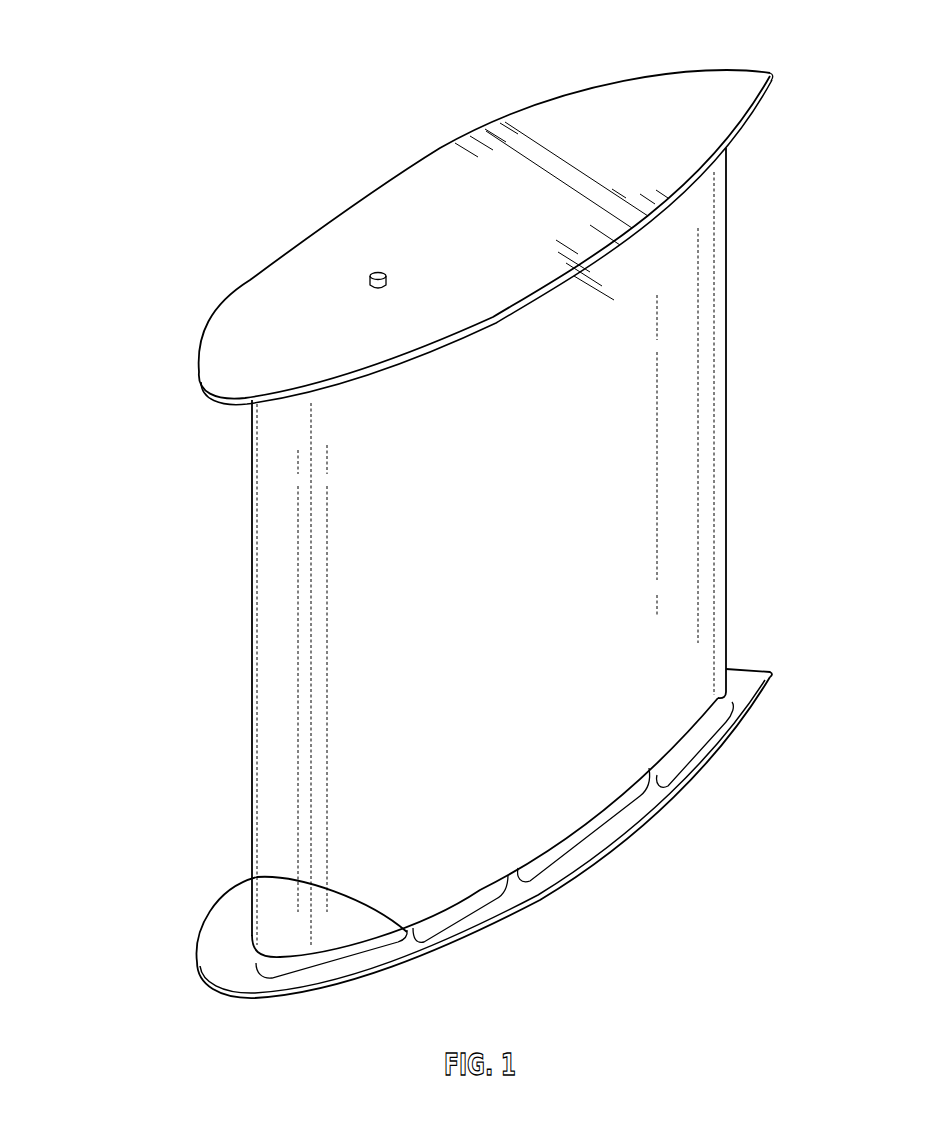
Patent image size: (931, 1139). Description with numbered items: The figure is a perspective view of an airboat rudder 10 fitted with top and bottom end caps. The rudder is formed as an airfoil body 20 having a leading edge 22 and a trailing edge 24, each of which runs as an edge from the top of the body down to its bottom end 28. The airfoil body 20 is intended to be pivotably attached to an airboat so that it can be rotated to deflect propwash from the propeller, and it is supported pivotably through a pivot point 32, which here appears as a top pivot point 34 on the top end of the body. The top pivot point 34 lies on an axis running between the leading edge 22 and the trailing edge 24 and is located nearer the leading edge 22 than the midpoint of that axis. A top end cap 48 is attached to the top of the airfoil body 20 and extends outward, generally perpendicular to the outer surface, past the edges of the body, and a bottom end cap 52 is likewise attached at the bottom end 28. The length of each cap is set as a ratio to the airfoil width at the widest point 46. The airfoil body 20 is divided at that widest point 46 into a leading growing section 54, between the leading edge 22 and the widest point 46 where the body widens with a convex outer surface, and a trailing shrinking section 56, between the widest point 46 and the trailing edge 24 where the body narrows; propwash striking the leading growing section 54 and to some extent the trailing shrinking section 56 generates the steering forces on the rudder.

The airboat rudder 10 is at (134, 229).
The airfoil body 20 is at (330, 760).
The leading edge 22 is at (250, 634).
The trailing edge 24 is at (728, 390).
The bottom end 28 is at (250, 877).
The pivot point 32 is at (385, 256).
The top pivot point 34 is at (375, 268).
The widest point 46 is at (510, 874).
The top end cap 48 is at (573, 122).
The bottom end cap 52 is at (500, 910).
The leading growing section 54 is at (412, 950).
The trailing shrinking section 56 is at (650, 790).